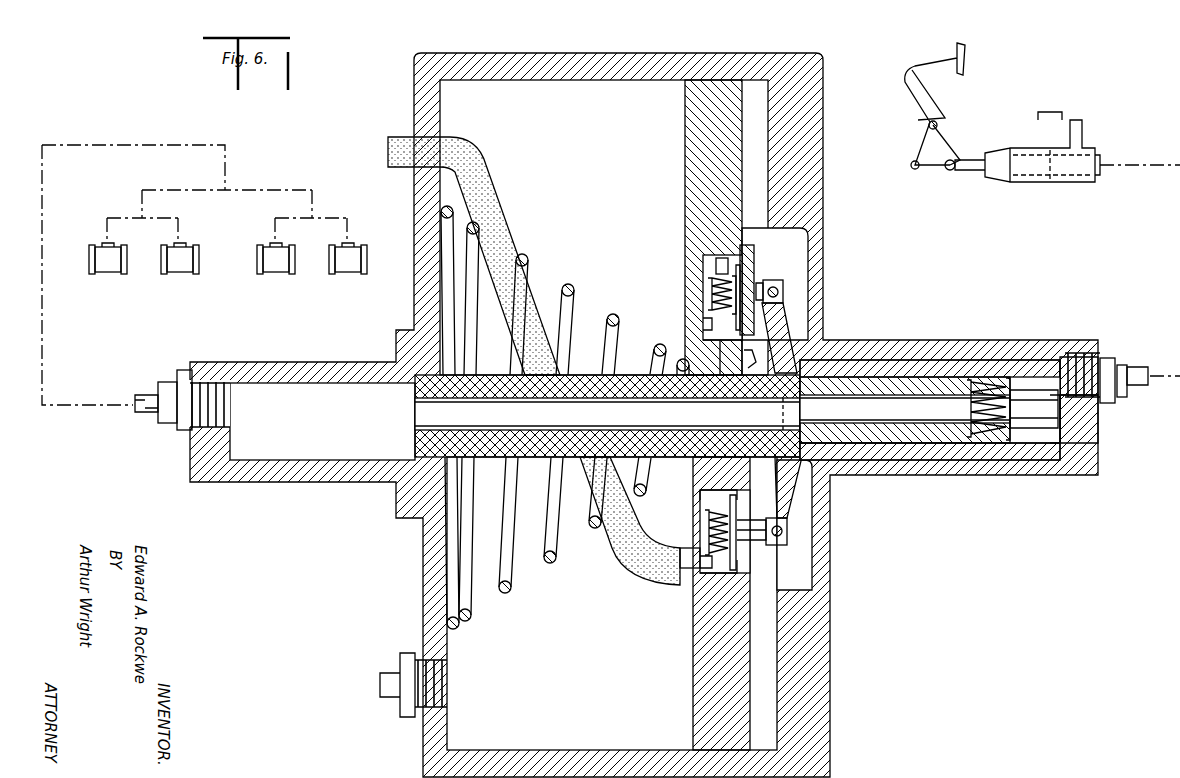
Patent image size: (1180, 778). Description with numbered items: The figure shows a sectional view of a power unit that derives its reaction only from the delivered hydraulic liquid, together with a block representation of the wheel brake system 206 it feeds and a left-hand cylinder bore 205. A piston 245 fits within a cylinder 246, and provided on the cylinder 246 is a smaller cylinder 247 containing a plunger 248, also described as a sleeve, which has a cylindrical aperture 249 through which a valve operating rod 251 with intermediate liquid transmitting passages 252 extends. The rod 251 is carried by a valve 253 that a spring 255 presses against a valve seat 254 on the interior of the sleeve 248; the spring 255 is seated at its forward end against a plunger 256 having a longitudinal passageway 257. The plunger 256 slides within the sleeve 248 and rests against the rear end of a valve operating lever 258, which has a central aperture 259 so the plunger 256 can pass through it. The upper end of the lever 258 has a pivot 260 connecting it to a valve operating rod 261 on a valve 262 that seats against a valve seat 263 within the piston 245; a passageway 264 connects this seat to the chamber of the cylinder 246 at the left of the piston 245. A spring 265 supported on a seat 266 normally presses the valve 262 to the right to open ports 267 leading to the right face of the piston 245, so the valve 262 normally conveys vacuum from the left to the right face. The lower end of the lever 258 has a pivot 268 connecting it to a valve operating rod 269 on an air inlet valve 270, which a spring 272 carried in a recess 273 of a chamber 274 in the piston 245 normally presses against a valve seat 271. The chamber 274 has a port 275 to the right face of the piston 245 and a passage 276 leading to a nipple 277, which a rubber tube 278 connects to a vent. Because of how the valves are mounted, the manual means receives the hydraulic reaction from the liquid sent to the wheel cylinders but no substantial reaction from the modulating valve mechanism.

The cylinder bore 205 is at (232, 395).
The wheel brake system 206 is at (42, 330).
The piston 245 is at (712, 147).
The cylinder 246 is at (595, 58).
The smaller cylinder 247 is at (962, 348).
The plunger 248 is at (887, 450).
The cylindrical aperture 249 is at (1030, 375).
The valve operating rod 251 is at (1058, 455).
The liquid transmitting passages 252 is at (1050, 402).
The valve 253 is at (1003, 437).
The valve seat 254 is at (1020, 442).
The spring 255 is at (968, 405).
The plunger 256 is at (862, 438).
The longitudinal passageway 257 is at (858, 418).
The valve operating lever 258 is at (775, 320).
The central aperture 259 is at (761, 358).
The pivot 260 is at (783, 290).
The valve operating rod 261 is at (778, 278).
The valve 262 is at (712, 262).
The valve seat 263 is at (735, 345).
The passageway 264 is at (705, 290).
The spring 265 is at (730, 300).
The seat 266 is at (712, 320).
The ports 267 is at (752, 240).
The pivot 268 is at (782, 545).
The valve operating rod 269 is at (758, 545).
The air inlet valve 270 is at (740, 515).
The valve seat 271 is at (750, 495).
The spring 272 is at (705, 526).
The recess 273 is at (712, 508).
The chamber 274 is at (720, 495).
The port 275 is at (740, 575).
The passage 276 is at (698, 585).
The nipple 277 is at (690, 570).
The rubber tube 278 is at (503, 195).